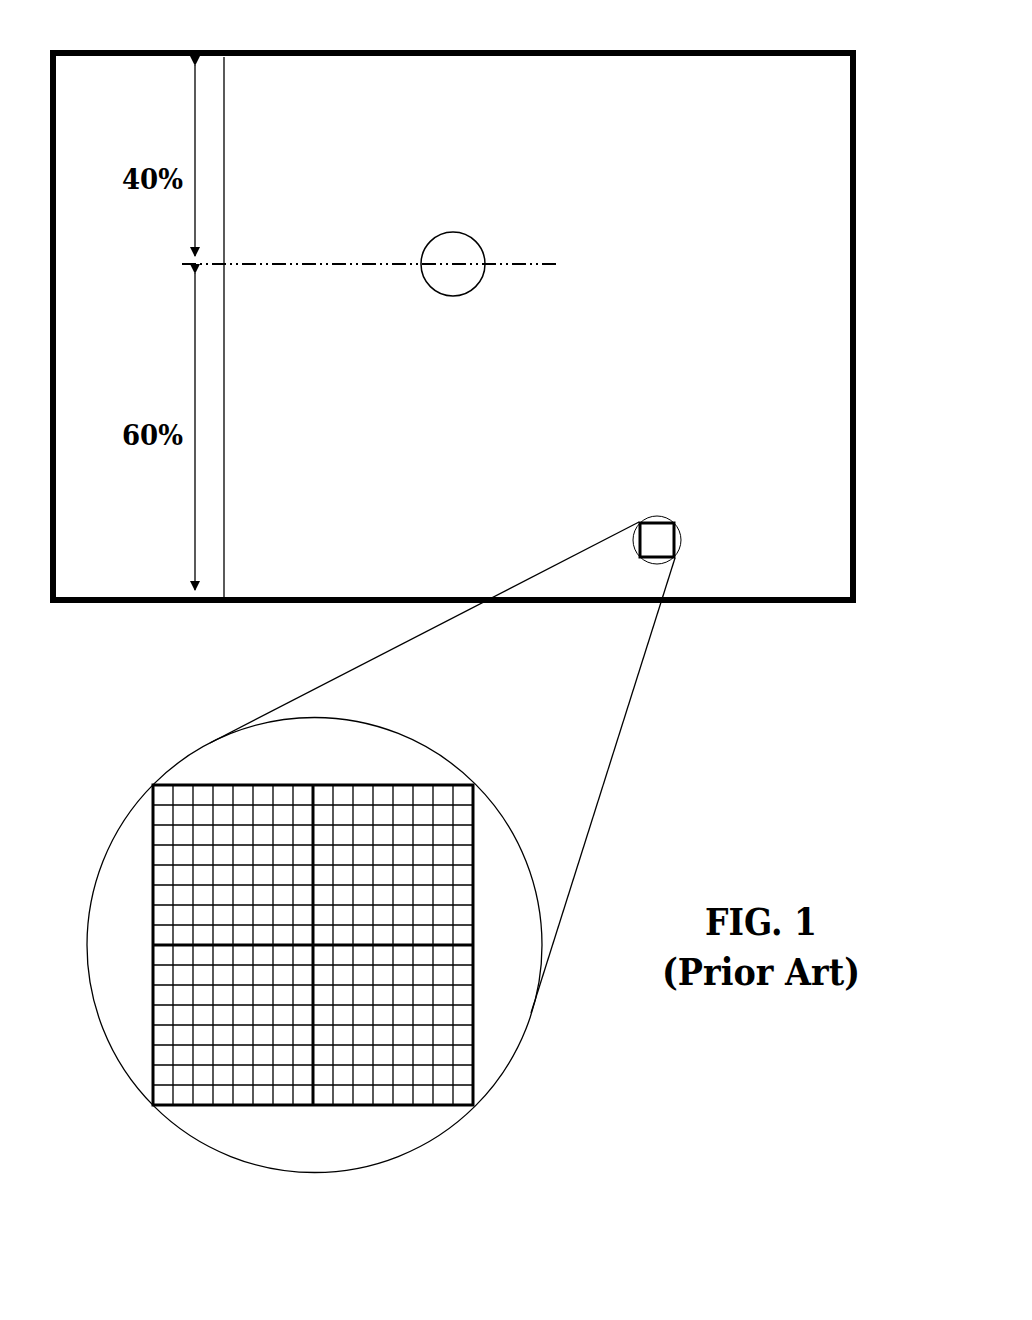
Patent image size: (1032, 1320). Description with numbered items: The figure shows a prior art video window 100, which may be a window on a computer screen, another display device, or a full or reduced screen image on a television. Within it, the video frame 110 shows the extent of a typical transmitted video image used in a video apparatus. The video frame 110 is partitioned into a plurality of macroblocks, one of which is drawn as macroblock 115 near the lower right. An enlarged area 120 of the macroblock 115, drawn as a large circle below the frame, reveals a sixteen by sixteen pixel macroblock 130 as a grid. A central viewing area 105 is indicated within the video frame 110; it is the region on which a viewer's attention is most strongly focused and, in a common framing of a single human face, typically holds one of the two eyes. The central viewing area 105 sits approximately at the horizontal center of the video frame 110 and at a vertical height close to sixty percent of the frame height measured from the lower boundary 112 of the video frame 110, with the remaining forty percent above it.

The video window 100 is at (780, 708).
The central viewing area 105 is at (456, 228).
The video frame 110 is at (376, 50).
The lower boundary 112 is at (320, 607).
The macroblock 115 is at (644, 518).
The enlarged area 120 is at (194, 748).
The 16×16 pixel macroblock 130 is at (502, 1006).